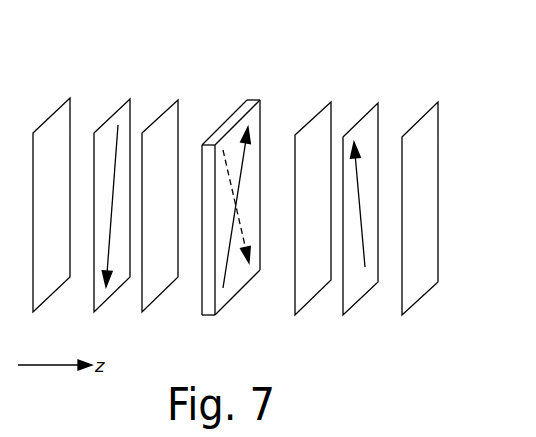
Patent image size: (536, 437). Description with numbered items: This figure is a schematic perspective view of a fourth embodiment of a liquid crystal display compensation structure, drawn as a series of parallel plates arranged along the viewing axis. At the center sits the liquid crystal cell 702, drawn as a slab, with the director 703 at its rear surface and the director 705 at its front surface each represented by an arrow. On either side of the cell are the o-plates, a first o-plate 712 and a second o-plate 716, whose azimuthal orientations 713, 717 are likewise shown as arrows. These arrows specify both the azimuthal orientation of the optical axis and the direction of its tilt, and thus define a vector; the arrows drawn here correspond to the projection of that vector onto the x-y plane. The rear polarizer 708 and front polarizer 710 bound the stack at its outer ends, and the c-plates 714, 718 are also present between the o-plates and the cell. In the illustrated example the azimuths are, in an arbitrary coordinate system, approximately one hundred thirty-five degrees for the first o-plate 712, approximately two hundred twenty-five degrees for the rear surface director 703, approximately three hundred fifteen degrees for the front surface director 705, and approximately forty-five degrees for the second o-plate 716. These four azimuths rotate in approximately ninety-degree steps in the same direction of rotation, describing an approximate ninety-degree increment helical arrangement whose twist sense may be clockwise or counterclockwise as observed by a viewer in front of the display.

The liquid crystal cell 702 is at (260, 99).
The director at the rear surface 703 is at (246, 265).
The director at the front surface 705 is at (225, 277).
The rear polarizer 708 is at (70, 98).
The front polarizer 710 is at (438, 102).
The o-plate 712 is at (130, 99).
The azimuthal orientation of the o-plate 713 is at (106, 237).
The c-plate 714 is at (178, 100).
The o-plate 716 is at (378, 103).
The azimuthal orientation of the o-plate 717 is at (362, 252).
The c-plate 718 is at (331, 102).